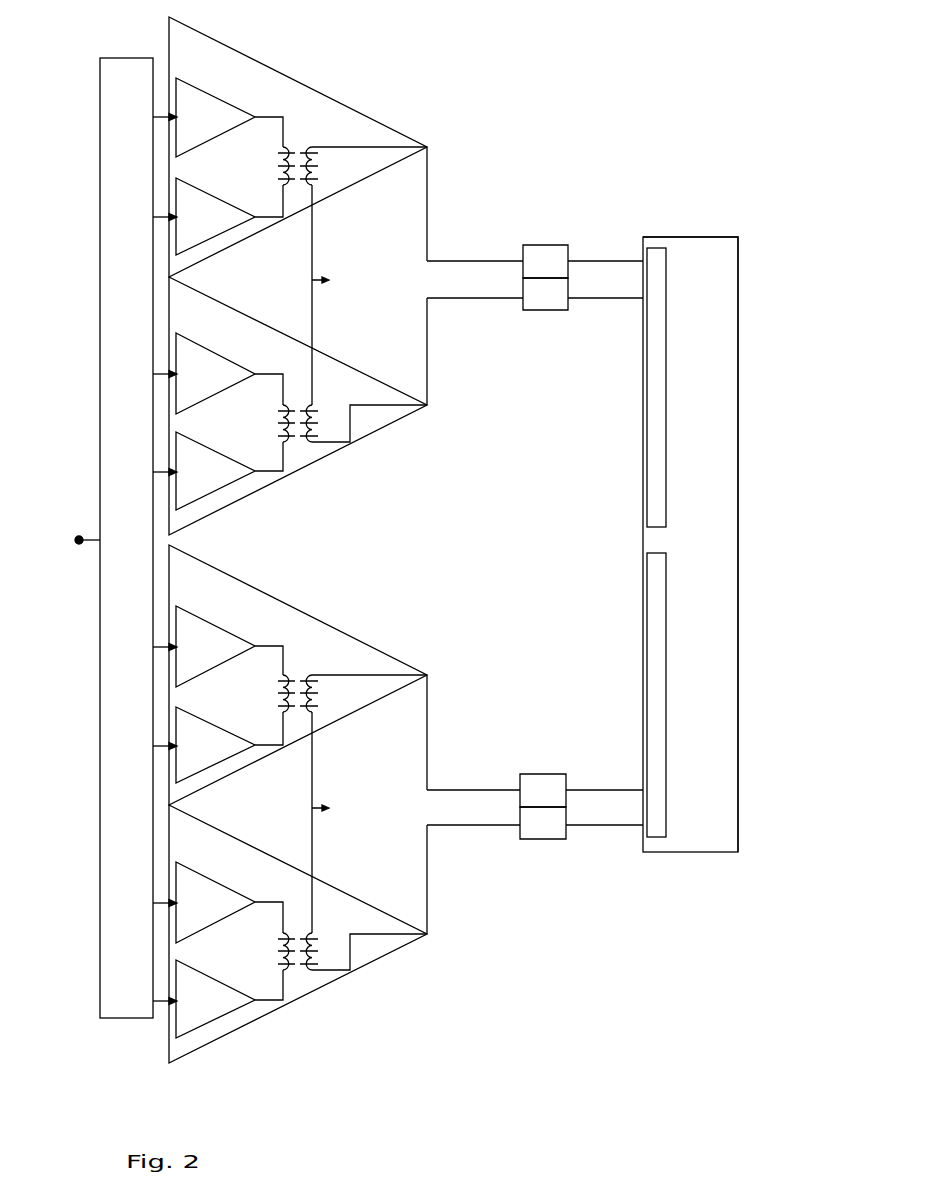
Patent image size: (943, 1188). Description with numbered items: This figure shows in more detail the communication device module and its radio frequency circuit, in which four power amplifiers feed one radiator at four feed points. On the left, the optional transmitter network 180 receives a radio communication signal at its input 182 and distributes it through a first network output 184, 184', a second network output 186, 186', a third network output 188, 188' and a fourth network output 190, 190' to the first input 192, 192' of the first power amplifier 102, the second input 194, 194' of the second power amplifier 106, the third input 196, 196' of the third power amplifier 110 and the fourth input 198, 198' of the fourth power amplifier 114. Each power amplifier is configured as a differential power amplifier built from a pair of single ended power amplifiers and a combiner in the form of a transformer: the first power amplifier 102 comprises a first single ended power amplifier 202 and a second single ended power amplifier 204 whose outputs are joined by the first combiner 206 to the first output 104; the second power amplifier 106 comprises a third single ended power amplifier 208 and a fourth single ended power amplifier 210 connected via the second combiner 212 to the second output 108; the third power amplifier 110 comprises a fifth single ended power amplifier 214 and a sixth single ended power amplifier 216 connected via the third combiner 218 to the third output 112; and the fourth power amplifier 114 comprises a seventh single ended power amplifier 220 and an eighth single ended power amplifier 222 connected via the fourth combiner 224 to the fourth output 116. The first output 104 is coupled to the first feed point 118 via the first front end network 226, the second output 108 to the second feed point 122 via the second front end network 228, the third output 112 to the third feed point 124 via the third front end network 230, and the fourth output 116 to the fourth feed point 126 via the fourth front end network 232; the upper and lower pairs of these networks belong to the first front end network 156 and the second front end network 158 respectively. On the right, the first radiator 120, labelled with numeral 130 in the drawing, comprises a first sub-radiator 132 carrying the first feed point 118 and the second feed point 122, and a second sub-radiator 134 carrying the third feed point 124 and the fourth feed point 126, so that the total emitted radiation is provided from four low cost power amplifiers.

The first power amplifier 102 is at (345, 105).
The first output 104 is at (430, 145).
The second power amplifier 106 is at (355, 368).
The second output 108 is at (430, 407).
The third power amplifier 110 is at (377, 647).
The third output 112 is at (428, 673).
The fourth power amplifier 114 is at (363, 900).
The fourth output 116 is at (428, 937).
The first feed point 118 is at (643, 260).
The first radiator 120 is at (687, 423).
The second feed point 122 is at (642, 297).
The third feed point 124 is at (642, 790).
The fourth feed point 126 is at (645, 828).
The load body 130 is at (687, 551).
The first sub-radiator 132 is at (657, 480).
The second sub-radiator 134 is at (658, 648).
The first front end network 156 is at (578, 218).
The second front end network 158 is at (580, 852).
The transmitter network 180 is at (109, 548).
The input 182 is at (77, 535).
The first network output 184 is at (139, 93).
The control signal line 184' is at (136, 195).
The second network output 186 is at (139, 349).
The control signal line 186' is at (137, 448).
The third network output 188 is at (139, 625).
The control signal line 188' is at (137, 725).
The fourth network output 190 is at (139, 876).
The control signal line 190' is at (137, 977).
The first input 192 is at (144, 136).
The amplifier input 192' is at (141, 239).
The second input 194 is at (142, 390).
The amplifier input 194' is at (141, 491).
The third input 196 is at (142, 663).
The amplifier input 196' is at (141, 763).
The fourth input 198 is at (142, 917).
The amplifier input 198' is at (141, 1029).
The first single ended power amplifier 202 is at (184, 132).
The second single ended power amplifier 204 is at (184, 224).
The first combiner 206 is at (308, 192).
The third single ended power amplifier 208 is at (184, 384).
The fourth single ended power amplifier 210 is at (184, 481).
The second combiner 212 is at (300, 407).
The fifth single ended power amplifier 214 is at (184, 661).
The sixth single ended power amplifier 216 is at (184, 756).
The third combiner 218 is at (297, 672).
The seventh single ended power amplifier 220 is at (184, 916).
The eighth single ended power amplifier 222 is at (184, 1011).
The fourth combiner 224 is at (297, 918).
The first front end network 226 is at (546, 252).
The second front end network 228 is at (539, 300).
The third front end network 230 is at (539, 782).
The fourth front end network 232 is at (539, 840).